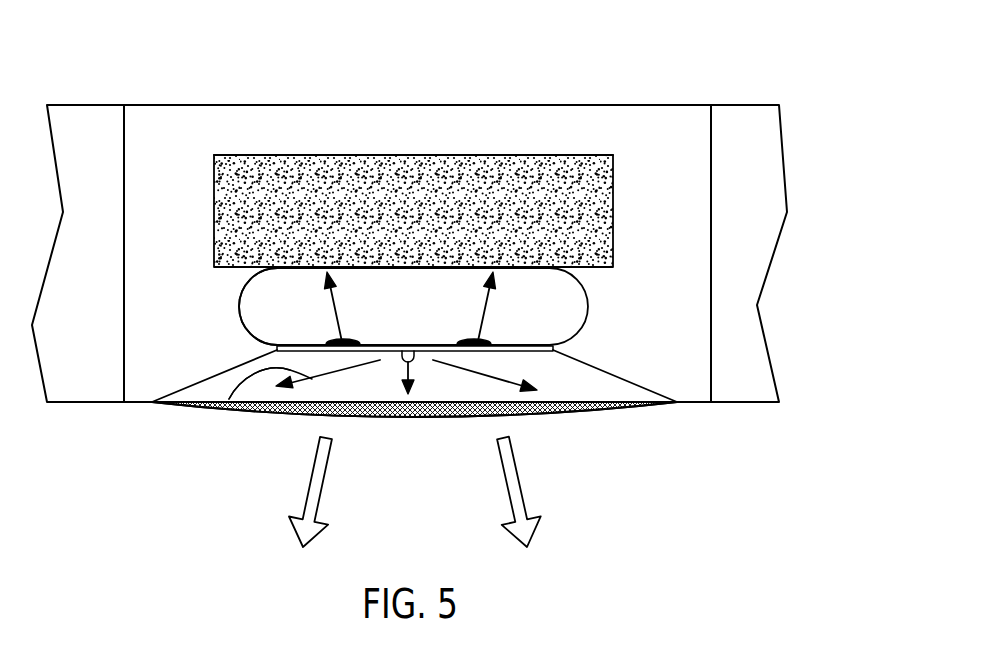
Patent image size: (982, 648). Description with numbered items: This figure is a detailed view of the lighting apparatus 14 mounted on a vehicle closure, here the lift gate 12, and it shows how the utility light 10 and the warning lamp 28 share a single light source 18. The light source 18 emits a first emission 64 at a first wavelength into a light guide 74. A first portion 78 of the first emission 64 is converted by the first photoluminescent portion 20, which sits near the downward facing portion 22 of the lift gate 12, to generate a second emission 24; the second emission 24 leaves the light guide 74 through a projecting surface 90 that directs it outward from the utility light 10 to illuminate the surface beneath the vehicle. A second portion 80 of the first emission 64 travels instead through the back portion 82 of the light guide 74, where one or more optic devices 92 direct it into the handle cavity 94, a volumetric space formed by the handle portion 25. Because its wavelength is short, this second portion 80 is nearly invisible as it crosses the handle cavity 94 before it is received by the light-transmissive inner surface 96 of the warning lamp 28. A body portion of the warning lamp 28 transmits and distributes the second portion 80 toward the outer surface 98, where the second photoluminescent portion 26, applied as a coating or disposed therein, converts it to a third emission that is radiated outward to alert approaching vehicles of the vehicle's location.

The utility light 10 is at (615, 397).
The lift gate 12 is at (80, 113).
The lighting apparatus 14 is at (610, 48).
The light source 18 is at (396, 362).
The first photoluminescent portion 20 is at (570, 408).
The downward facing portion 22 is at (705, 423).
The second emission 24 is at (323, 492).
The handle portion 25 is at (588, 293).
The second photoluminescent portion 26 is at (262, 163).
The warning lamp 28 is at (332, 155).
The first emission 64 is at (483, 375).
The light guide 74 is at (620, 386).
The first portion of the first emission 78 is at (229, 399).
The second portion of the first emission 80 is at (340, 316).
The back portion 82 is at (545, 339).
The projecting surface 90 is at (272, 410).
The optic devices 92 is at (331, 342).
The handle cavity 94 is at (263, 292).
The inner surface 96 is at (526, 282).
The outer surface 98 is at (576, 233).